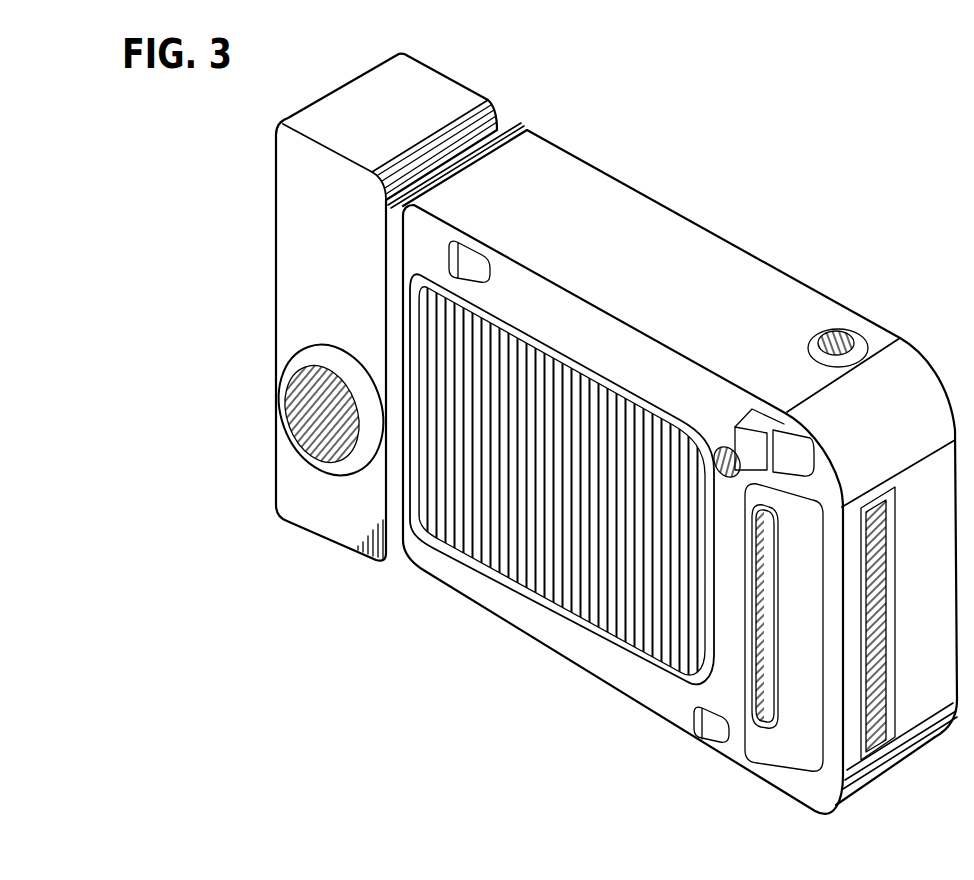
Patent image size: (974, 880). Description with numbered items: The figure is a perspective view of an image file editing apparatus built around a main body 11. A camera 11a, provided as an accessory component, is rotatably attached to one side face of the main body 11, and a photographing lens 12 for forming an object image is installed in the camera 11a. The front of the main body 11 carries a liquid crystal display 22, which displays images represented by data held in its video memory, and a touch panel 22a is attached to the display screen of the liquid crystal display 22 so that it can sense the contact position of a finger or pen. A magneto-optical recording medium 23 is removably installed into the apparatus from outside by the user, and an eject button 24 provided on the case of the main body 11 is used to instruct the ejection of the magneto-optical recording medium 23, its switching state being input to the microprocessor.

The main body 11 is at (683, 237).
The camera 11a is at (441, 95).
The photographing lens 12 is at (330, 436).
The liquid crystal display 22 is at (562, 543).
The touch panel 22a is at (655, 637).
The magneto-optical recording medium 23 is at (870, 692).
The eject button 24 is at (724, 456).